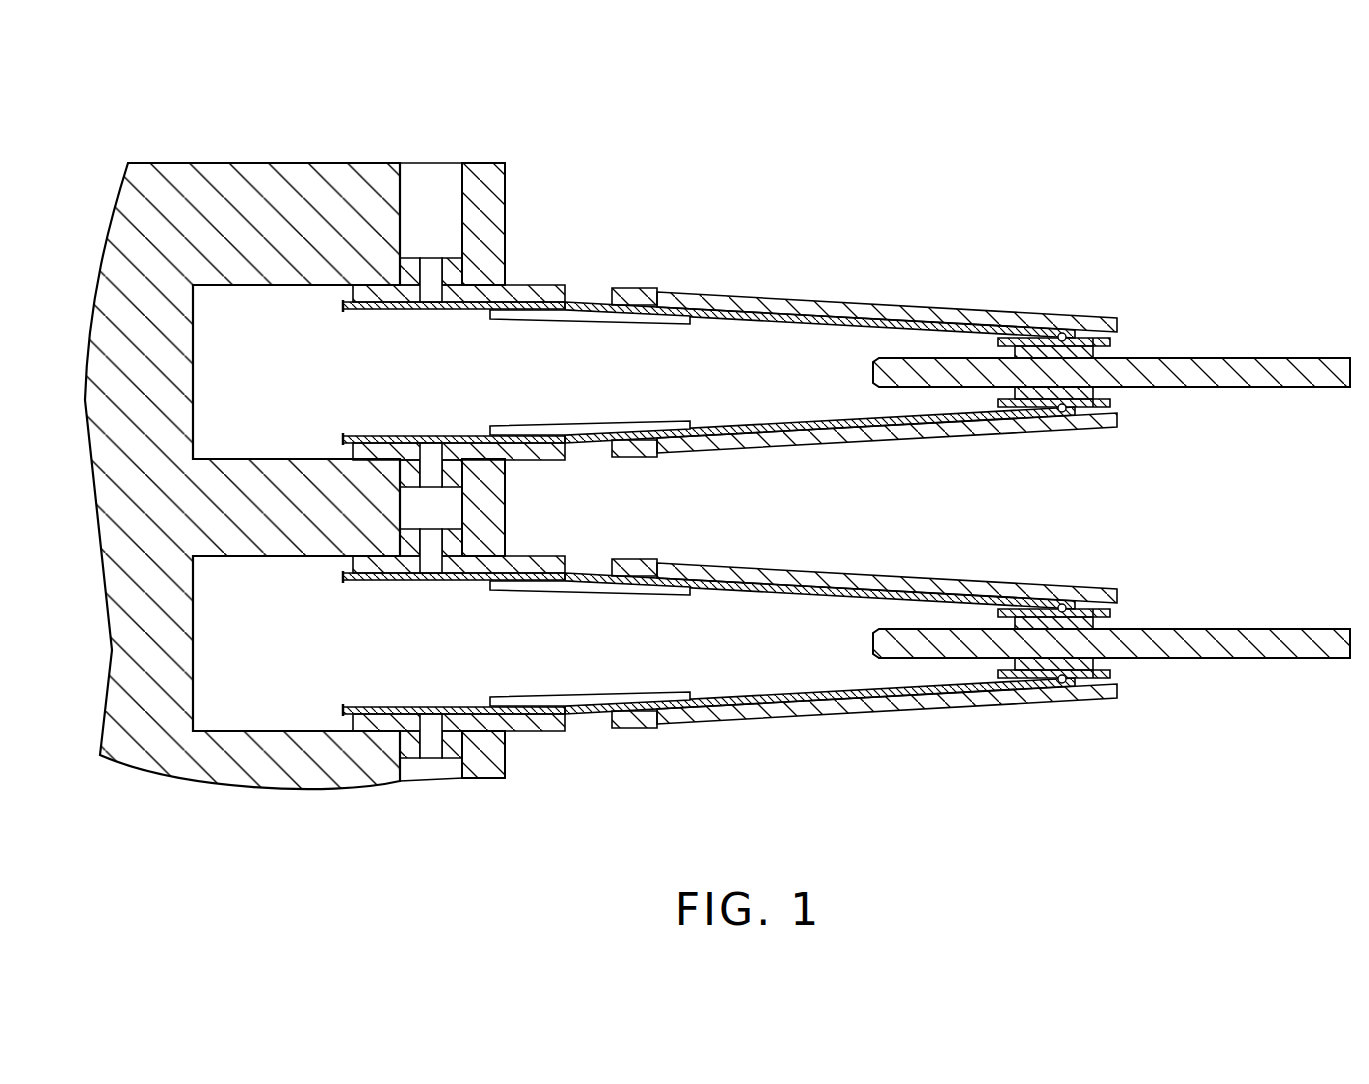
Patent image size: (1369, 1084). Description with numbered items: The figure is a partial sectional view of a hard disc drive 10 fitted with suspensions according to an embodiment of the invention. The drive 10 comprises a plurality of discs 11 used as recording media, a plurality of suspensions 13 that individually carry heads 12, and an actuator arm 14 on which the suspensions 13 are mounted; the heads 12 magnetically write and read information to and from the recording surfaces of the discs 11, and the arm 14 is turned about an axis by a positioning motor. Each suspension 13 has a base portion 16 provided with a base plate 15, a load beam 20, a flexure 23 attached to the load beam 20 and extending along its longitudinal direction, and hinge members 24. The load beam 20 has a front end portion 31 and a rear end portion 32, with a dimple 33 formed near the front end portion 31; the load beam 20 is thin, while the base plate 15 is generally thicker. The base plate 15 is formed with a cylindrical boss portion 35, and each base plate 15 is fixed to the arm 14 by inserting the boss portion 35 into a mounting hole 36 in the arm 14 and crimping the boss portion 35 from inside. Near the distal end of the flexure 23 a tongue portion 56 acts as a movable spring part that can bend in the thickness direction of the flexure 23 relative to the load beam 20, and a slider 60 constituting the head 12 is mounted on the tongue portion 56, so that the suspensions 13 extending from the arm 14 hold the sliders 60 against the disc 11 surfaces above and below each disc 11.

The hard disc drive 10 is at (258, 128).
The disc 11 is at (1276, 357).
The head 12 is at (1108, 300).
The suspension 13 is at (770, 292).
The arm 14 is at (362, 192).
The base plate 15 is at (540, 294).
The base portion 16 is at (360, 310).
The load beam 20 is at (874, 303).
The flexure 23 is at (800, 326).
The hinge member 24 is at (582, 324).
The front end portion 31 is at (1099, 337).
The rear end portion 32 is at (648, 290).
The dimple 33 is at (1046, 337).
The boss portion 35 is at (405, 275).
The mounting hole 36 is at (476, 190).
The tongue portion 56 is at (995, 341).
The slider 60 is at (1114, 345).